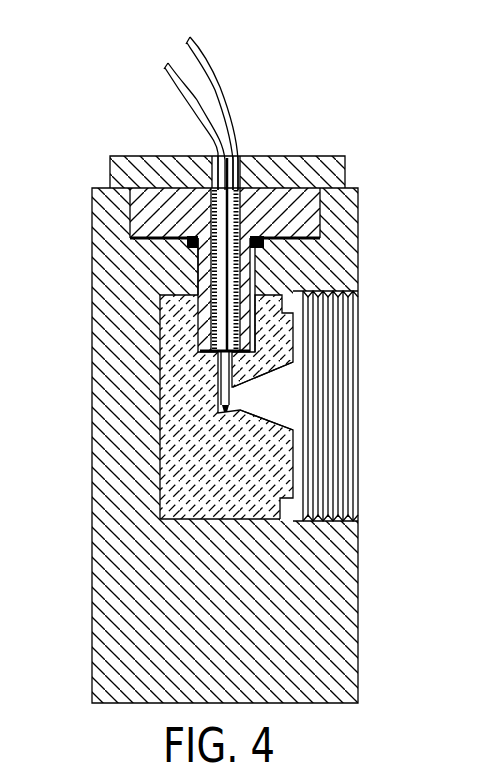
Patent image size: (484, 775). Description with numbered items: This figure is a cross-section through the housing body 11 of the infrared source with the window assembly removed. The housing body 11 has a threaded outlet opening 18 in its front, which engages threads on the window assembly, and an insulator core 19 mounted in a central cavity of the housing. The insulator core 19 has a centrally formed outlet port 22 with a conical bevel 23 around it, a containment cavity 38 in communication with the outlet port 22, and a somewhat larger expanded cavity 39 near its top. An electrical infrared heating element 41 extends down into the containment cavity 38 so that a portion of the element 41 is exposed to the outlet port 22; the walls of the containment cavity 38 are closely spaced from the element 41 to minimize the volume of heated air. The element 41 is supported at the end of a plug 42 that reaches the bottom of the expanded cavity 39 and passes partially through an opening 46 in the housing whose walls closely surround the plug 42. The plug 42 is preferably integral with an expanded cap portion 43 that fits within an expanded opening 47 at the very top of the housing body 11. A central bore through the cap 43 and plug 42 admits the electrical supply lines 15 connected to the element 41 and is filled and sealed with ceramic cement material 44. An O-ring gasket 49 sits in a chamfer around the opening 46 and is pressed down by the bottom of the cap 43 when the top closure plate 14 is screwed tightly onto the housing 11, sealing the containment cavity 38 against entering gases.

The housing body 11 is at (92, 572).
The top closure plate 14 is at (301, 157).
The electrical supply lines 15 is at (188, 42).
The outlet opening 18 is at (330, 297).
The insulator core 19 is at (175, 392).
The outlet port 22 is at (250, 412).
The conical bevel 23 is at (238, 390).
The containment cavity 38 is at (240, 410).
The expanded cavity 39 is at (197, 320).
The electrical infrared heating element 41 is at (215, 410).
The plug 42 is at (255, 284).
The cap portion 43 is at (316, 236).
The ceramic cement material 44 is at (174, 156).
The opening 46 is at (195, 247).
The expanded opening 47 is at (138, 218).
The O-ring gasket 49 is at (236, 197).